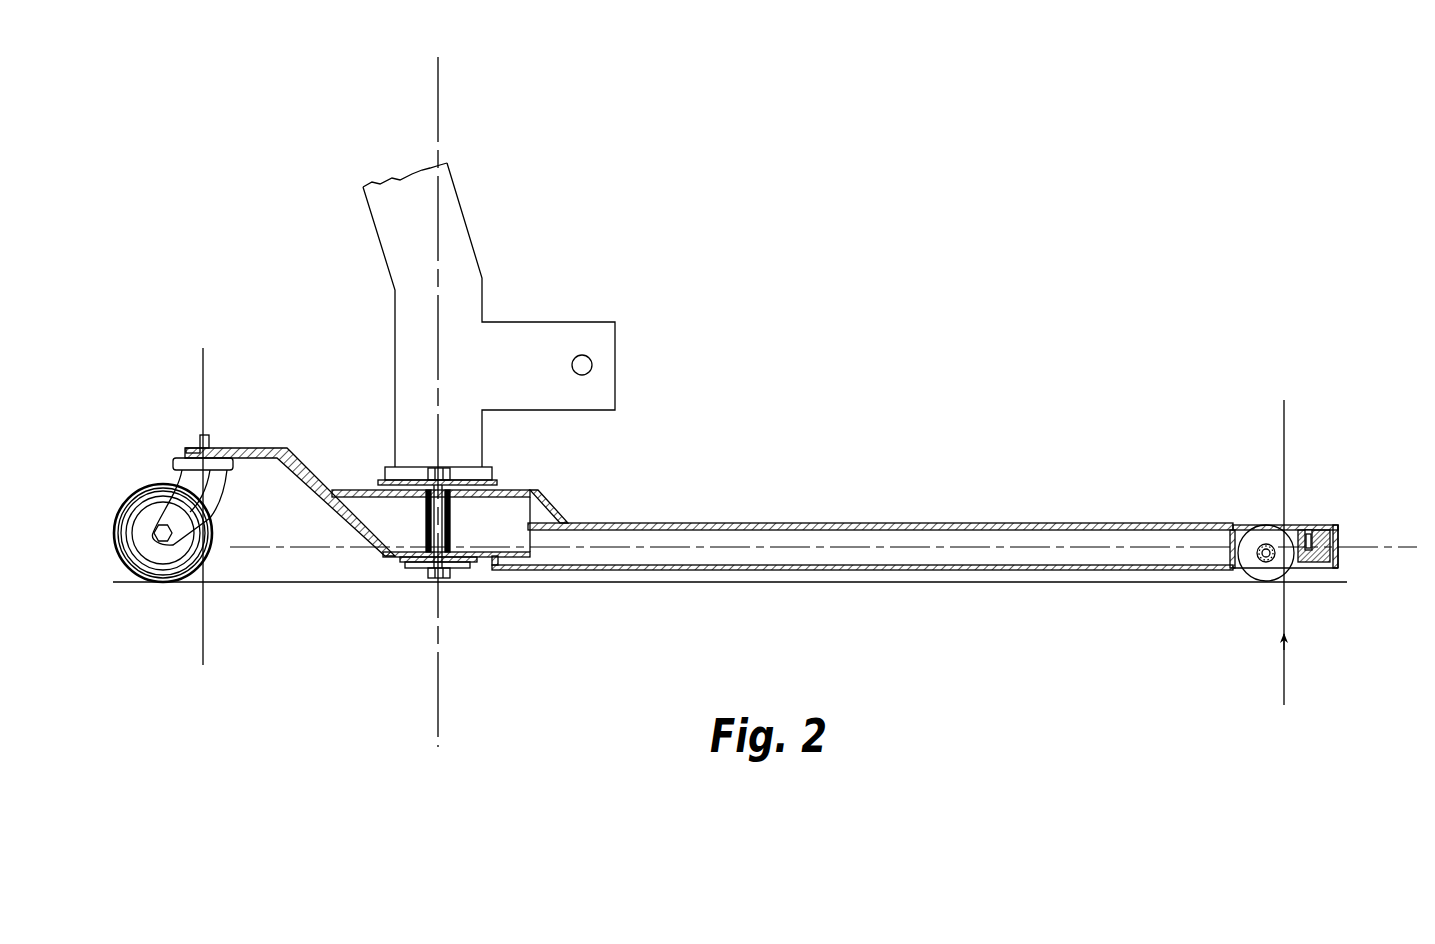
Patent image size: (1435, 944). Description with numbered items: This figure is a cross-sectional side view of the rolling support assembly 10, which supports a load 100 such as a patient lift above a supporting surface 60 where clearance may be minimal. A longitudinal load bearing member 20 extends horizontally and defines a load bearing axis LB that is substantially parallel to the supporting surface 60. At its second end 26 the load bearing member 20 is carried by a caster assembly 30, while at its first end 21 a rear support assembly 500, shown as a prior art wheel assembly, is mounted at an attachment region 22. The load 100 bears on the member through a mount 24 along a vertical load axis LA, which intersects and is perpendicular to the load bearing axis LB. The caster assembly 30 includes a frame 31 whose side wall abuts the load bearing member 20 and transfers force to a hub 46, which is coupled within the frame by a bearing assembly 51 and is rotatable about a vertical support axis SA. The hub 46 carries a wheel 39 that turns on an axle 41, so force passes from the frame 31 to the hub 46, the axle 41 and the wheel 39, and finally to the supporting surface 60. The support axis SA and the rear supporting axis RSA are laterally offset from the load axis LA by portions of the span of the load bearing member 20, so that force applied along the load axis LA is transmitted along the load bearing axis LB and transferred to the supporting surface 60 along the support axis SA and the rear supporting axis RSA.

The rolling support assembly 10 is at (848, 377).
The longitudinal load bearing member 20 is at (765, 522).
The first end 21 is at (247, 421).
The attachment region 22 is at (197, 444).
The mount 24 is at (442, 466).
The second end 26 is at (1284, 650).
The caster assembly 30 is at (1302, 518).
The frame 31 is at (1232, 540).
The wheel 39 is at (1255, 572).
The axle 41 is at (1270, 556).
The hub 46 is at (1320, 562).
The bearing assembly 51 is at (1338, 532).
The supporting surface 60 is at (818, 583).
The load 100 is at (450, 215).
The rear support assembly 500 is at (155, 553).
The load axis LA is at (438, 103).
The load bearing axis LB is at (263, 550).
The support axis SA is at (1284, 420).
The rear supporting axis RSA is at (205, 368).